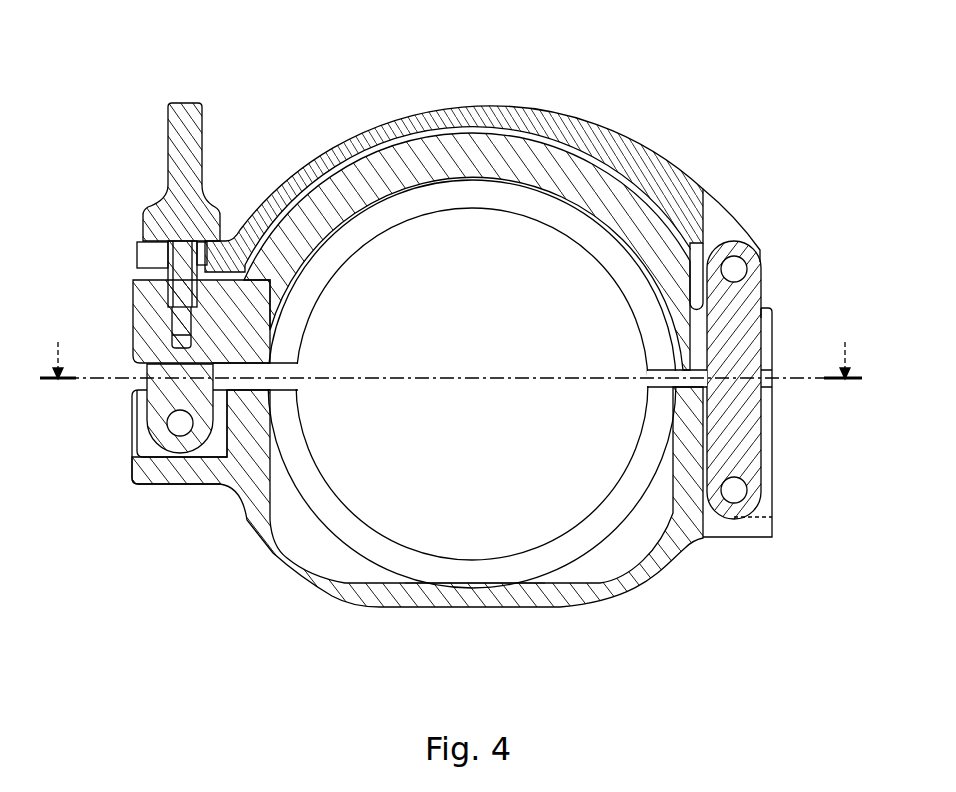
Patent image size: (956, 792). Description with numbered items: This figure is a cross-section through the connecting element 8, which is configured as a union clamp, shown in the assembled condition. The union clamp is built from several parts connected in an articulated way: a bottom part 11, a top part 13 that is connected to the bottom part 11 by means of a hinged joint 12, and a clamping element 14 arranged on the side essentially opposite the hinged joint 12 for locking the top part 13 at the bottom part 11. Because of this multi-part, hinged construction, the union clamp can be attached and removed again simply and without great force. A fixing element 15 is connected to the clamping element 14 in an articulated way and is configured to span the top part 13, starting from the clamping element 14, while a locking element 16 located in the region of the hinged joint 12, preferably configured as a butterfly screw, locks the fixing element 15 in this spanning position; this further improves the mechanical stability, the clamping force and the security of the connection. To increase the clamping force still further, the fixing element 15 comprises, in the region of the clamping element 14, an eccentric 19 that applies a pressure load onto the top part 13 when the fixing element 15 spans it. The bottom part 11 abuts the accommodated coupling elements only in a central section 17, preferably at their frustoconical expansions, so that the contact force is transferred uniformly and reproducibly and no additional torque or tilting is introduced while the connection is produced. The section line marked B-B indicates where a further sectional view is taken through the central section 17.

The connecting element 8 is at (679, 137).
The bottom part 11 is at (308, 583).
The hinged joint 12 is at (178, 424).
The top part 13 is at (362, 165).
The clamping element 14 is at (745, 300).
The fixing element 15 is at (418, 115).
The locking element 16 is at (160, 205).
The central section 17 is at (543, 610).
The eccentric 19 is at (762, 252).